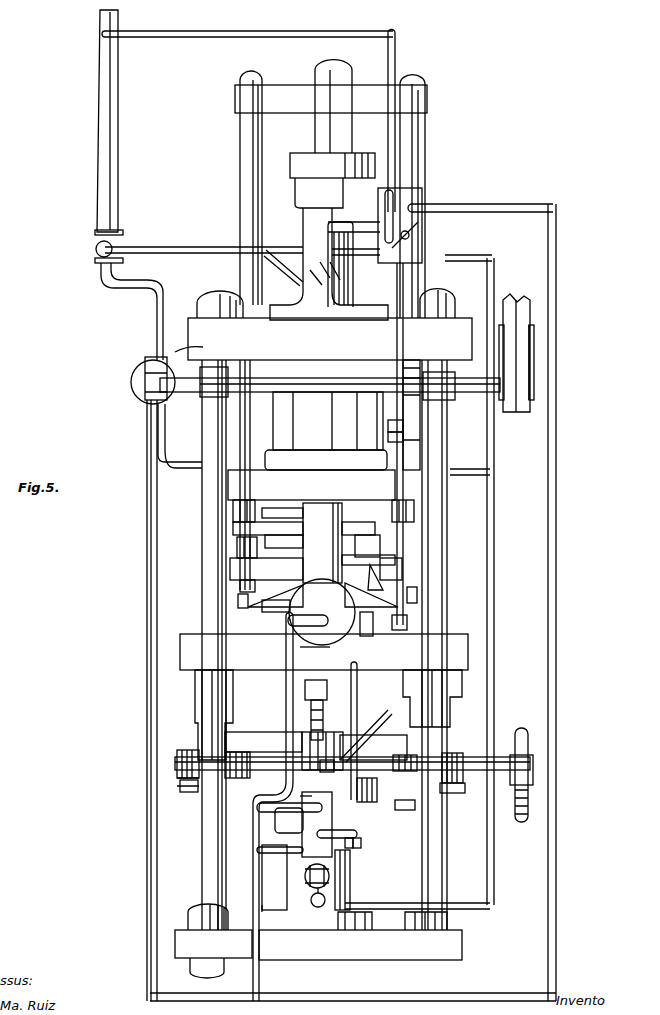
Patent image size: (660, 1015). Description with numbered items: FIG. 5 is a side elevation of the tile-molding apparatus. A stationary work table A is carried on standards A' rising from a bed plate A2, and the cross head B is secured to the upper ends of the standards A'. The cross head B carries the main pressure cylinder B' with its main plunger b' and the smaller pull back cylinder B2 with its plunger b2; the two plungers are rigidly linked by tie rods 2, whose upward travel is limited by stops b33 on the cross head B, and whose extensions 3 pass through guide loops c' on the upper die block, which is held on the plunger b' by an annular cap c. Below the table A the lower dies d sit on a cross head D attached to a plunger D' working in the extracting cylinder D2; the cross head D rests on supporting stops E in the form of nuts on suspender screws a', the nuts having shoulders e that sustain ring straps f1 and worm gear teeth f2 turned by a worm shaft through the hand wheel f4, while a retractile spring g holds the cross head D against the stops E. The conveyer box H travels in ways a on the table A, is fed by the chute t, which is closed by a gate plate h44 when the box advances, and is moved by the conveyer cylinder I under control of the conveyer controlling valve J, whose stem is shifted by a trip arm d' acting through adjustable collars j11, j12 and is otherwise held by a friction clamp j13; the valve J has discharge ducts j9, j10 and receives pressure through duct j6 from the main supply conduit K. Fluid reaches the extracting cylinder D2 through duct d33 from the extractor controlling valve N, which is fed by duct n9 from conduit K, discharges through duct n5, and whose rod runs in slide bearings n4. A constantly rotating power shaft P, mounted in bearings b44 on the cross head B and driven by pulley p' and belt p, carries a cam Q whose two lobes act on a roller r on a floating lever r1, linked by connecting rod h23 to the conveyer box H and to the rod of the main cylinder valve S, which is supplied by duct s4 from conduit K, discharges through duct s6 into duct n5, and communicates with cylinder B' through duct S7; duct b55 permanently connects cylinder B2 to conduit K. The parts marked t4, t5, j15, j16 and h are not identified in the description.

The duct s4 is at (393, 148).
The main fluid pressure supply conduit K is at (112, 136).
The duct b55 is at (242, 242).
The duct j6 is at (297, 238).
The duct n9 is at (132, 311).
The duct s6 is at (362, 602).
The discharge duct n5 is at (137, 700).
The duct d33 is at (188, 454).
The tie rods 2 is at (335, 330).
The plunger b2 is at (329, 190).
The duct S7 is at (324, 272).
The pull back cylinder B2 is at (354, 264).
The main pressure cylinder valve S is at (400, 406).
The cross head B is at (330, 339).
The slide bearings n4 is at (178, 341).
The extractor controlling valve N is at (133, 392).
The cam Q is at (292, 504).
The power shaft P is at (302, 393).
The bearings b44 is at (327, 383).
The standards A' is at (323, 645).
The belt p is at (516, 353).
The pulley p' is at (537, 362).
The roller r is at (408, 420).
The floating lever r1 is at (408, 432).
The main pressure cylinder B' is at (326, 431).
The connecting rod h23 is at (311, 485).
The stops b33 is at (233, 514).
The main plunger b' is at (270, 535).
The guide loops c' is at (348, 569).
The chute t is at (322, 543).
The annular cap c is at (368, 556).
The extensions 3 is at (328, 597).
The ways a is at (318, 655).
The conveyer cylinder I is at (321, 612).
The gate plate h44 is at (274, 616).
The conveyer box H is at (371, 624).
The lower dies d is at (272, 807).
The work table A is at (324, 652).
The pipe t4 is at (293, 746).
The pipe t5 is at (370, 665).
The adjustable collar j11 is at (302, 724).
The cross head D is at (284, 747).
The plunger D' is at (373, 728).
The trip arm d' is at (311, 758).
The adjustable collar j12 is at (320, 762).
The shoulders e is at (178, 760).
The ring straps f1 is at (289, 764).
The worm gear teeth f2 is at (180, 787).
The supporting stops E is at (321, 771).
The retractile spring g is at (458, 760).
The hand wheel f4 is at (521, 766).
The suspender screws a' is at (429, 810).
The discharge duct j9 is at (273, 812).
The conveyer controlling valve J is at (329, 824).
The extracting cylinder D2 is at (276, 877).
The wheel h is at (330, 874).
The friction clamp j13 is at (303, 895).
The discharge duct j10 is at (249, 894).
The valve j15 is at (358, 843).
The valve j16 is at (376, 843).
The bed plate A2 is at (318, 941).